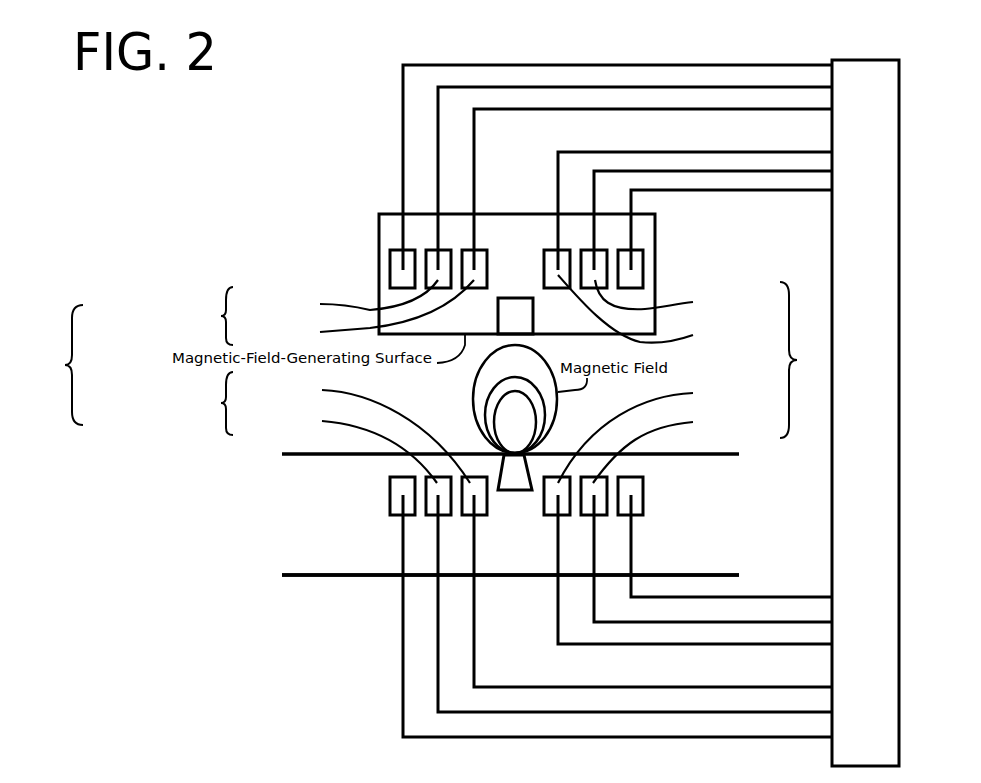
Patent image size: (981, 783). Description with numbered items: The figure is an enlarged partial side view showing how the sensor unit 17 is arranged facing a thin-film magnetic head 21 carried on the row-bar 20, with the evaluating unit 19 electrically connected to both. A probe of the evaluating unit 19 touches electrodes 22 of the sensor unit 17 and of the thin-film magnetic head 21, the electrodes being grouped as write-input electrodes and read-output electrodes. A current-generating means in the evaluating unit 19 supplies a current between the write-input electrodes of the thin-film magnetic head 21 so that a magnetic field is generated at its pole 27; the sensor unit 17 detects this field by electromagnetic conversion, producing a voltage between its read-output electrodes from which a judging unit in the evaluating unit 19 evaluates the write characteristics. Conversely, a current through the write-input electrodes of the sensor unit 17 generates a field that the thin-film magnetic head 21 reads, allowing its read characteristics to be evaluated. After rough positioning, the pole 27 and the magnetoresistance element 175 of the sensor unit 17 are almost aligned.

The sensor unit 17 is at (379, 238).
The magnetoresistance element 175 is at (521, 300).
The evaluating unit 19 is at (872, 44).
The row-bar 20 is at (331, 588).
The thin-film magnetic head 21 is at (521, 565).
The electrodes 22 is at (65, 365).
The pole 27 is at (518, 478).